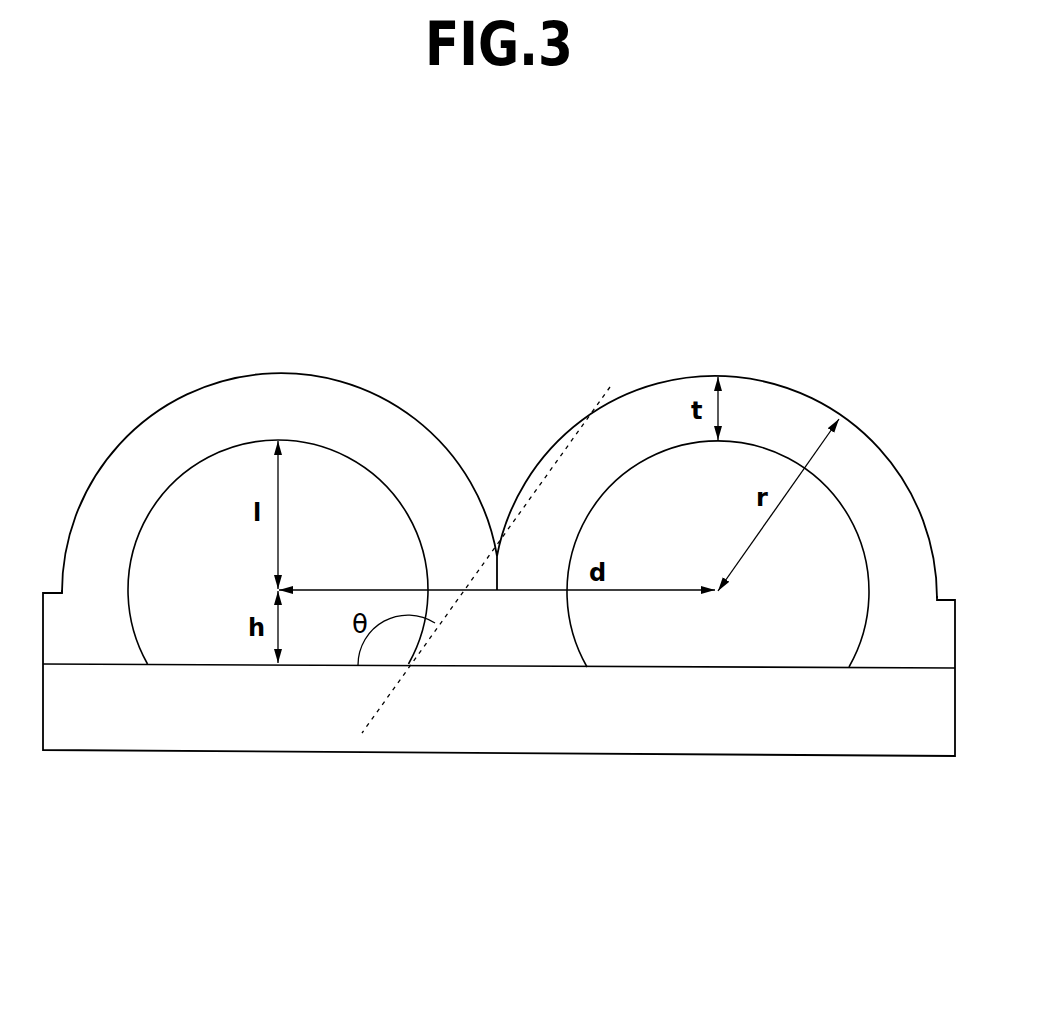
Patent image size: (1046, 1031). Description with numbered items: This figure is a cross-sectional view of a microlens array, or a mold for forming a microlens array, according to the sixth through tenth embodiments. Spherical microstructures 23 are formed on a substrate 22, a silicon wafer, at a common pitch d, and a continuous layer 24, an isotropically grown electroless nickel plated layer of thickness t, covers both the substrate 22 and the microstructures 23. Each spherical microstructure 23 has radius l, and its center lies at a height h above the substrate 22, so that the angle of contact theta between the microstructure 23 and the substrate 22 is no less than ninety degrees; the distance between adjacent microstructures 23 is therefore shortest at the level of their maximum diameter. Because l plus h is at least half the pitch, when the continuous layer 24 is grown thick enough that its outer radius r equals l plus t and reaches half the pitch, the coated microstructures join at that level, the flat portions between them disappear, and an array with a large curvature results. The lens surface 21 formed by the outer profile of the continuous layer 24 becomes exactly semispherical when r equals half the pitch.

The lens 21 is at (323, 378).
The substrate 22 is at (505, 738).
The spherical microstructure 23 is at (188, 540).
The continuous layer 24 is at (648, 405).